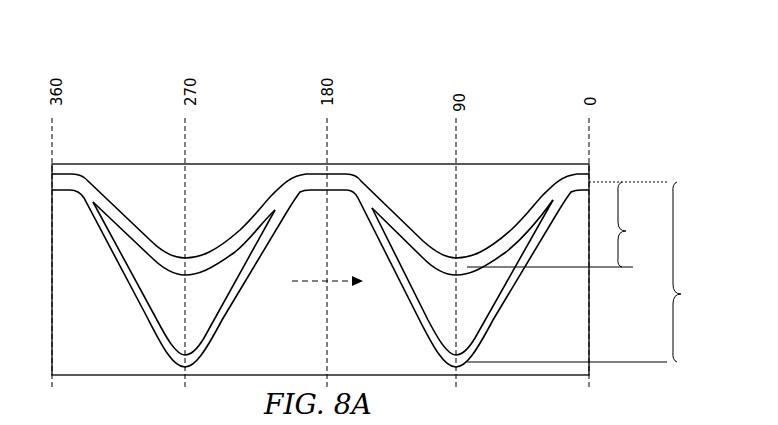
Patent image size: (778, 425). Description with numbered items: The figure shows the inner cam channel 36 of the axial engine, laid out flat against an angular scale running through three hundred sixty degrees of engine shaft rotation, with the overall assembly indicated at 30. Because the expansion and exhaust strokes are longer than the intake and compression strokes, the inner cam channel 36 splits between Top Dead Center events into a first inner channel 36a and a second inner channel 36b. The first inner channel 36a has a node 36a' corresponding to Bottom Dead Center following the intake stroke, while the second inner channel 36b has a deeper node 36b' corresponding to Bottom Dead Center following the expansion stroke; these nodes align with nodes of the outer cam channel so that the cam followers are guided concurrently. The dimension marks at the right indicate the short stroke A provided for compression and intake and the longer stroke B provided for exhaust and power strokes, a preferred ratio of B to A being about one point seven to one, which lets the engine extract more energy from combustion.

The spring element assembly 30 is at (112, 60).
The inner cam channel 36 is at (320, 263).
The first inner channel 36a is at (320, 191).
The second inner channel 36b is at (320, 302).
The node 36a' is at (323, 307).
The node 36b' is at (323, 307).
The short stroke A is at (626, 231).
The longer stroke B is at (681, 294).